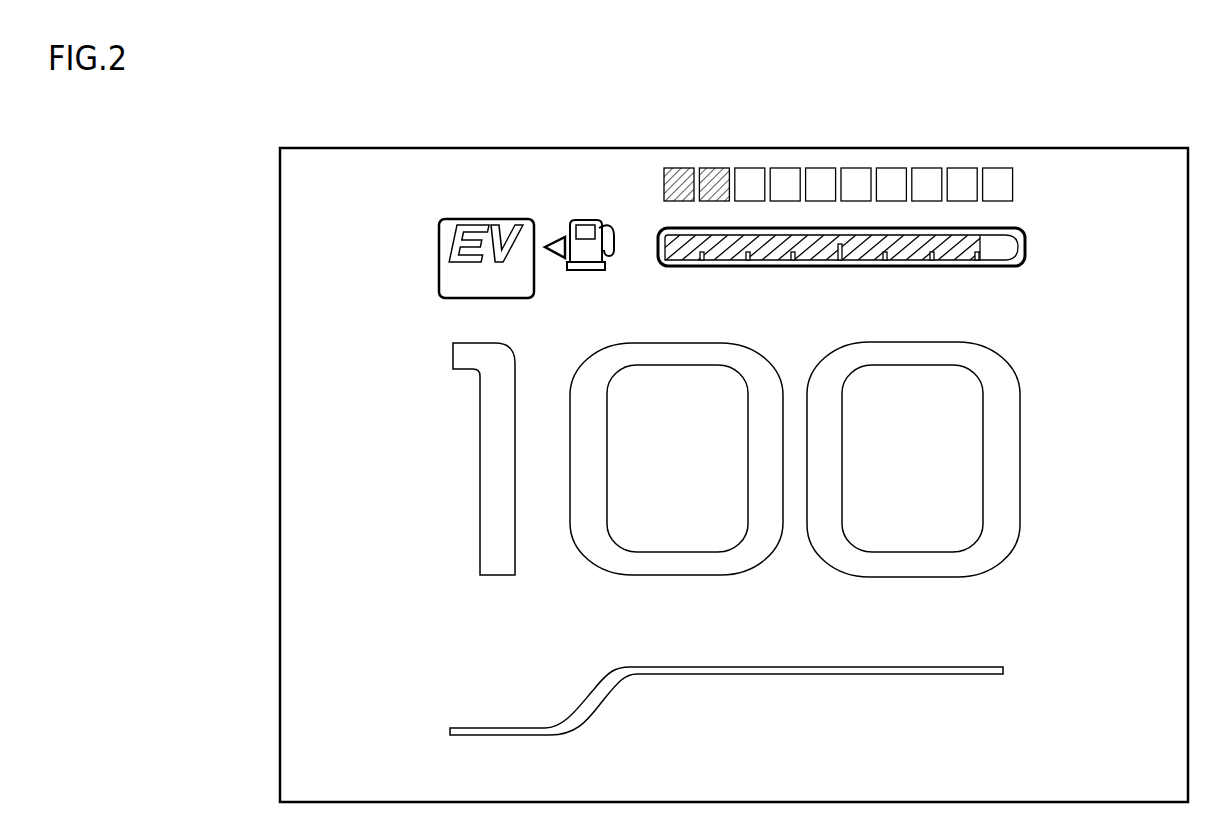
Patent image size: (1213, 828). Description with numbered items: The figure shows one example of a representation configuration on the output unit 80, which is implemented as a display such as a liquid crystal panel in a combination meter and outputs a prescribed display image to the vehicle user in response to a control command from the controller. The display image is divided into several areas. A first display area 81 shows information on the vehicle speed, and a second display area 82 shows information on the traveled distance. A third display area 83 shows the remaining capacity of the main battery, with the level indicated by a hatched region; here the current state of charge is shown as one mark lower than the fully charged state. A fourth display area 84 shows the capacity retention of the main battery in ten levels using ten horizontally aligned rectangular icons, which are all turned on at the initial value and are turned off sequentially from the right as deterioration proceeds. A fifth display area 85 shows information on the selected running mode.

The output unit 80 is at (1010, 148).
The first display area 81 is at (1085, 323).
The second display area 82 is at (1087, 673).
The third display area 83 is at (1083, 225).
The fourth display area 84 is at (1083, 167).
The fifth display area 85 is at (459, 218).